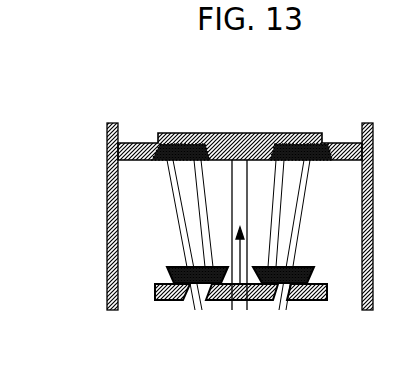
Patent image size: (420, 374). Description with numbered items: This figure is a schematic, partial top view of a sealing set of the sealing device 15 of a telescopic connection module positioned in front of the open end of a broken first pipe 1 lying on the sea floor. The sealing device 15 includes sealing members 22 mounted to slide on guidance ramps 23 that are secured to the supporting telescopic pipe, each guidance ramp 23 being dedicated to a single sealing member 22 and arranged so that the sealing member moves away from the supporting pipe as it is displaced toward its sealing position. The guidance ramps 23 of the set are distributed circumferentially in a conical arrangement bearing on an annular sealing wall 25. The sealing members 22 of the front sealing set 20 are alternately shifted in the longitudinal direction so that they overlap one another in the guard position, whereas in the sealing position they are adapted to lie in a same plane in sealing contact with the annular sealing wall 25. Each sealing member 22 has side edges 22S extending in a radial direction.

The first pipe 1 is at (112, 245).
The sealing device 15 is at (138, 98).
The front sealing set 20 is at (346, 307).
The sealing member 22 is at (302, 266).
The side edge 22S is at (327, 150).
The guidance ramp 23 is at (245, 185).
The annular sealing wall 25 is at (208, 133).